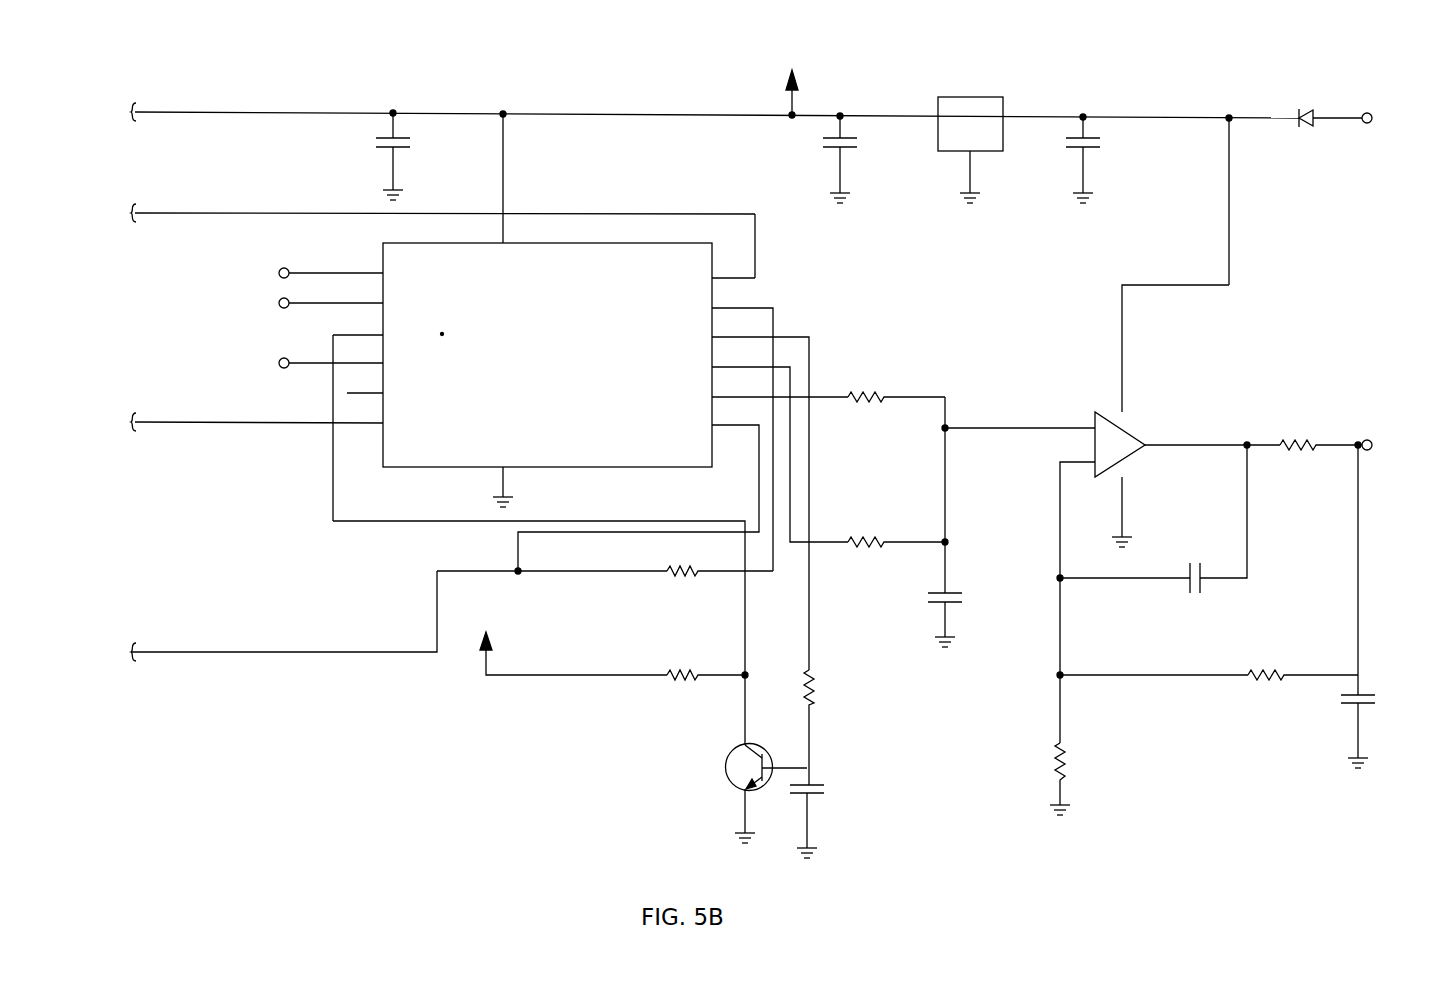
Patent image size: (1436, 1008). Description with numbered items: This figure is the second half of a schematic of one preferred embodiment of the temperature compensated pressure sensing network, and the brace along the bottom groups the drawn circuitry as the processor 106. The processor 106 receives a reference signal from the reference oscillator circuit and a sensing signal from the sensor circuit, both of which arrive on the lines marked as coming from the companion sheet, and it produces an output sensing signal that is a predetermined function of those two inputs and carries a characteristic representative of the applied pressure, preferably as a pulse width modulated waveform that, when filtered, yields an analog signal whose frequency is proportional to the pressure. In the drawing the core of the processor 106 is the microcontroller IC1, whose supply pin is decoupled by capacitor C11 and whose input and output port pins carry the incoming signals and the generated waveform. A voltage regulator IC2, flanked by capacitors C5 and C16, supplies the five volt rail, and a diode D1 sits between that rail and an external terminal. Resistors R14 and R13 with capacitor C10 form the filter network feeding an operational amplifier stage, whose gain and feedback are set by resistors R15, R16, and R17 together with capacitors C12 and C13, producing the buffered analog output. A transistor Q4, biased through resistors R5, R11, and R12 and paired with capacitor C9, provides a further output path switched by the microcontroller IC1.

The processor 106 is at (783, 480).
The microcontroller PIC16C505 IC1 is at (541, 369).
The voltage regulator LM3480 IC2 is at (973, 125).
The transistor MMBT3904L Q4 is at (693, 794).
The diode MA111 D1 is at (1306, 138).
The capacitor C5 is at (875, 158).
The capacitor C9 is at (842, 816).
The capacitor C10 is at (979, 616).
The capacitor C11 is at (424, 155).
The capacitor C12 is at (1196, 590).
The capacitor C13 is at (1388, 725).
The capacitor C16 is at (1115, 158).
The resistor R5 is at (701, 584).
The resistor R11 is at (696, 688).
The resistor R12 is at (846, 723).
The resistor R13 is at (891, 554).
The resistor R14 is at (891, 412).
The resistor R15 is at (1314, 458).
The resistor R16 is at (1296, 689).
The resistor R17 is at (1088, 775).